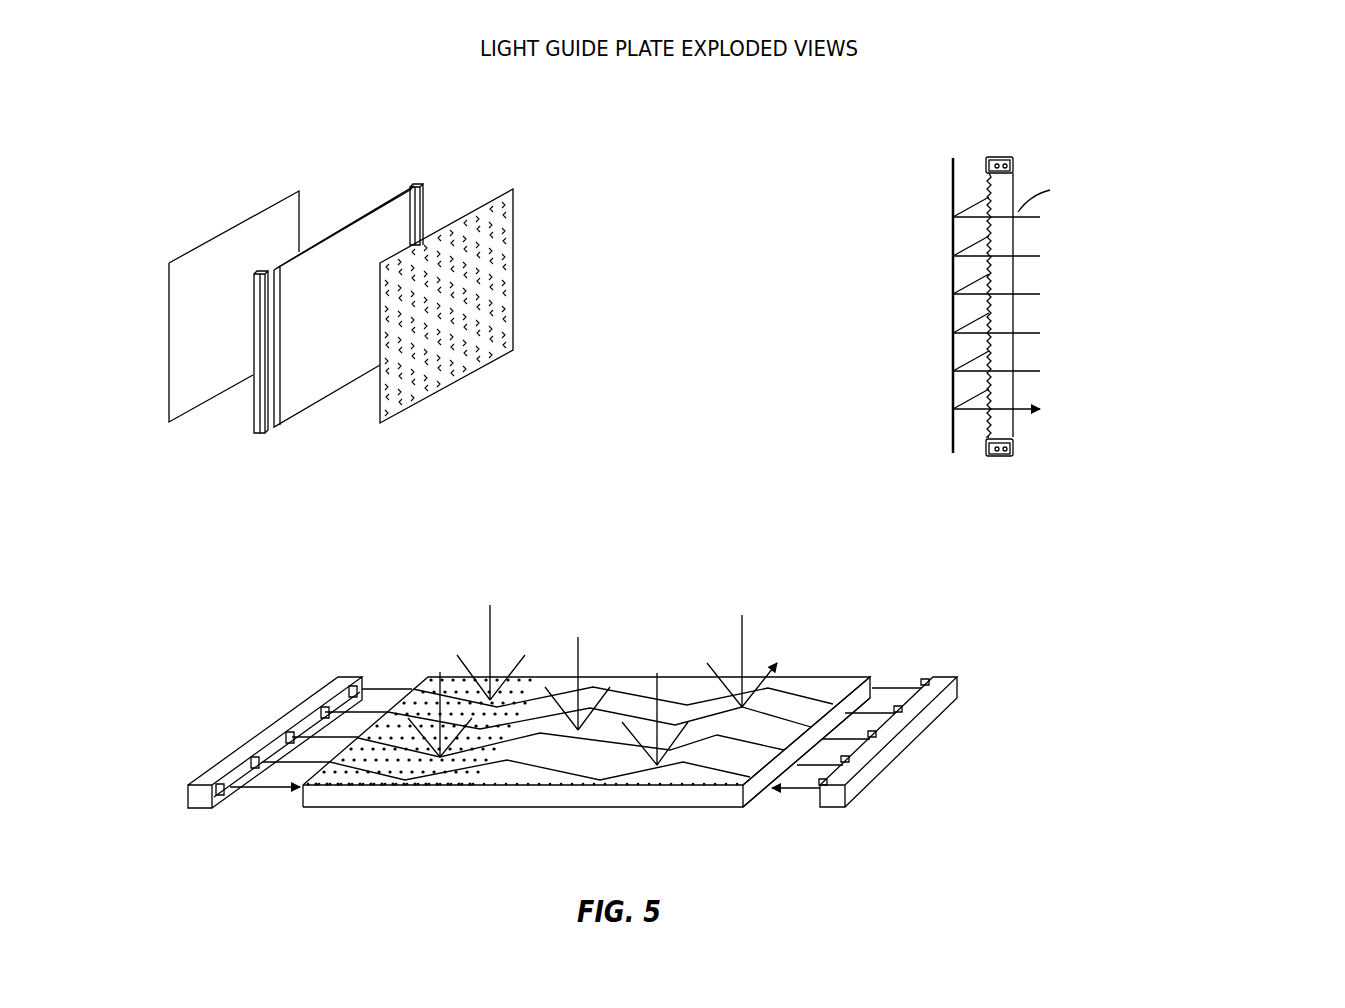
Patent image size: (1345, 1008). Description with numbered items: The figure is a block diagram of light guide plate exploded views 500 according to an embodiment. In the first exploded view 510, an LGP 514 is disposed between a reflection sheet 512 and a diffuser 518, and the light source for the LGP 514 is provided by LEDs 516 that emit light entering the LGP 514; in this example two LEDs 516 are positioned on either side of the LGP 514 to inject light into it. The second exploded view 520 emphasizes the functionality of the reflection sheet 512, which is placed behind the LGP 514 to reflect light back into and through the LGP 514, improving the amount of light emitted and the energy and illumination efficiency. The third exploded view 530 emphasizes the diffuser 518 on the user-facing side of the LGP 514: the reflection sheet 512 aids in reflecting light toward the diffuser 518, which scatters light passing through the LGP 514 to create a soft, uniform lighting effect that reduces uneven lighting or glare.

The light guide plate exploded views 500 is at (1262, 38).
The first exploded view 510 is at (160, 102).
The reflection sheet 512 is at (952, 310).
The LGP 514 is at (1050, 302).
The LEDs 516 is at (998, 645).
The diffuser 518 is at (455, 383).
The second exploded view 520 is at (1058, 122).
The third exploded view 530 is at (283, 602).